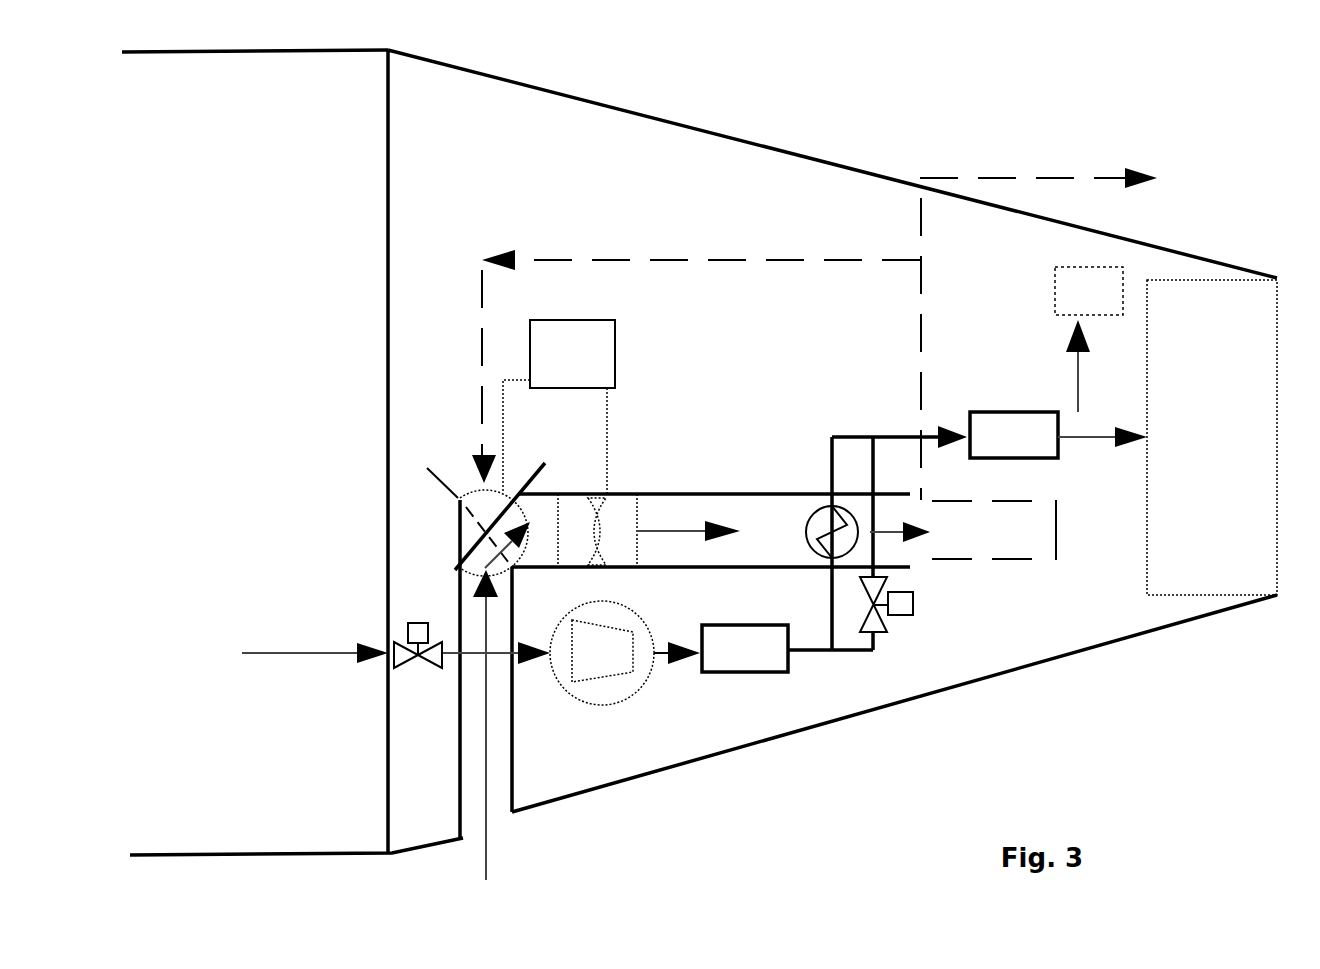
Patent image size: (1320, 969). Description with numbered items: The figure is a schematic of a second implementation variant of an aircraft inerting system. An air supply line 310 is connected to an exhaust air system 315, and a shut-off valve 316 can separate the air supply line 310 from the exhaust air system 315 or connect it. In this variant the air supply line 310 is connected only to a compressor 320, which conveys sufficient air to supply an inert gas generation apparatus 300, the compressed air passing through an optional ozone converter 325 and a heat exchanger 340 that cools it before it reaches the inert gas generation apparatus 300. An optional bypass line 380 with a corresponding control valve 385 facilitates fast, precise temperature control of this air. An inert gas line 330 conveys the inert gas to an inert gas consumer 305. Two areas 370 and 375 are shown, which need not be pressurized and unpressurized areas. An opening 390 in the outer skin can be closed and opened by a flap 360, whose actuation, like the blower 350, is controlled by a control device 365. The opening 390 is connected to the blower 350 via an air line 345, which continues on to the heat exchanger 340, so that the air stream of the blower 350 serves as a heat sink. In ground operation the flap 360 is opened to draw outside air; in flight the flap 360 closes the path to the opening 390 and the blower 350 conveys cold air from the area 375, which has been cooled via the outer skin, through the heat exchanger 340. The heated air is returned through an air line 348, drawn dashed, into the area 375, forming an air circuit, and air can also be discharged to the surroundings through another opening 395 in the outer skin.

The inert gas generation apparatus 300 is at (998, 435).
The inert gas consumer 305 is at (1166, 431).
The air supply line 310 is at (525, 660).
The exhaust air system 315 is at (378, 649).
The shut-off valve 316 is at (418, 631).
The compressor 320 is at (625, 664).
The ozone converter 325 is at (745, 648).
The inert gas line 330 is at (1102, 383).
The heat exchanger 340 is at (849, 543).
The air line 345 is at (457, 669).
The air line 348 is at (994, 544).
The blower 350 is at (711, 477).
The flap 360 is at (474, 519).
The control device 365 is at (559, 406).
The area 370 is at (255, 66).
The area 375 is at (703, 452).
The bypass line 380 is at (830, 665).
The control valve 385 is at (896, 612).
The opening 390 is at (503, 725).
The opening 395 is at (814, 321).